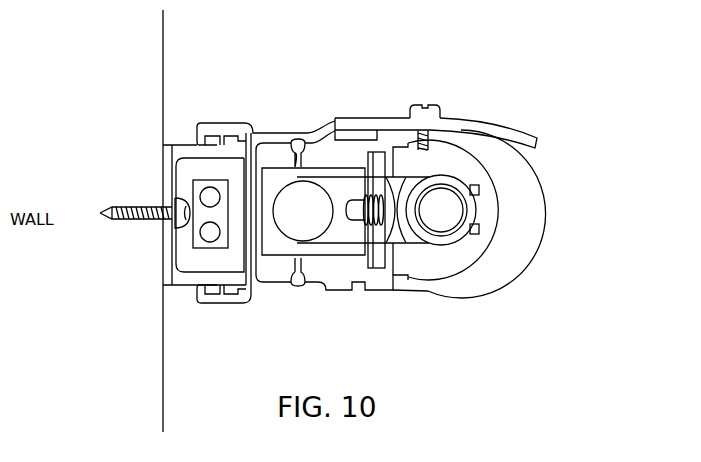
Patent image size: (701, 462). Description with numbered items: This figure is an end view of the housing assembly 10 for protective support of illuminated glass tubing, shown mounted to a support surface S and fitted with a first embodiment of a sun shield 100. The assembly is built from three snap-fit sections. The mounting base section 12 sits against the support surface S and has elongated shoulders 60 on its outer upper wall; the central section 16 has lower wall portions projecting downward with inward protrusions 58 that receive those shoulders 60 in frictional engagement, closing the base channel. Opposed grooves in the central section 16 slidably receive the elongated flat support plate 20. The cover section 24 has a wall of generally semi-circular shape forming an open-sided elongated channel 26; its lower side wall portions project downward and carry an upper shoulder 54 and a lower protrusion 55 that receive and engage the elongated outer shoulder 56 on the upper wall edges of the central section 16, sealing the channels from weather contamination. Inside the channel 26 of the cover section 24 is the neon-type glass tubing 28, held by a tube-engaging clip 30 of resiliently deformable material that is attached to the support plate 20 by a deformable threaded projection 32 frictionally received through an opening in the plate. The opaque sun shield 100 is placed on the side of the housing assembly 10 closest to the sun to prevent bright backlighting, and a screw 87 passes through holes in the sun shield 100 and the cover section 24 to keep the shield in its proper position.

The housing assembly 10 is at (271, 115).
The mounting base section 12 is at (173, 283).
The central section 16 is at (277, 285).
The support plate 20 is at (377, 265).
The cover section 24 is at (436, 300).
The elongated channel 26 is at (457, 261).
The glass tubing 28 is at (338, 228).
The tube-engaging clips 30 is at (449, 166).
The threaded projection 32 is at (364, 194).
The upper shoulder 54 is at (396, 150).
The lower protrusion 55 is at (343, 137).
The outer shoulder 56 is at (380, 148).
The inward protrusions 58 is at (204, 140).
The elongated shoulders 60 is at (229, 138).
The screw 87 is at (427, 105).
The sun shield 100 is at (537, 125).
The support surface S is at (163, 300).